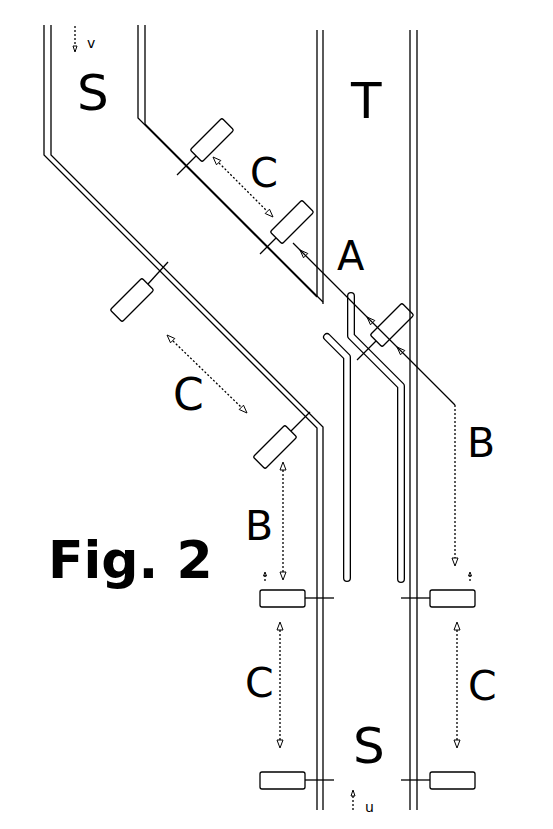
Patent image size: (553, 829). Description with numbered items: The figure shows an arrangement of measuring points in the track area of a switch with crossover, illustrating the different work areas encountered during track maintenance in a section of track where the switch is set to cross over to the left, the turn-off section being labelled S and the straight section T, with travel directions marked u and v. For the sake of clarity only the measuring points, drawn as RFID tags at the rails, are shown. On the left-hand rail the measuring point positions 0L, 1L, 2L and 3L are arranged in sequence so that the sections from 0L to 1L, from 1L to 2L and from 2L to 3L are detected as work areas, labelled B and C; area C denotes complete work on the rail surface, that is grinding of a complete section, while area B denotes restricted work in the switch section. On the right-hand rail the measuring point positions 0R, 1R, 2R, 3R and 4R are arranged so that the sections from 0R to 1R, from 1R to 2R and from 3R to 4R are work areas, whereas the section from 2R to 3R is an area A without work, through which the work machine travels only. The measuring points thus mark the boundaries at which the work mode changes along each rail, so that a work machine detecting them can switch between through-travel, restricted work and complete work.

The measuring point position 4R is at (247, 150).
The measuring point position 3R is at (283, 188).
The measuring point position 2R is at (427, 338).
The measuring point position 3L is at (140, 332).
The measuring point position 2L is at (243, 437).
The measuring point position 1L is at (279, 600).
The measuring point position 0L is at (277, 783).
The measuring point position 1R is at (455, 600).
The measuring point position 0R is at (456, 783).